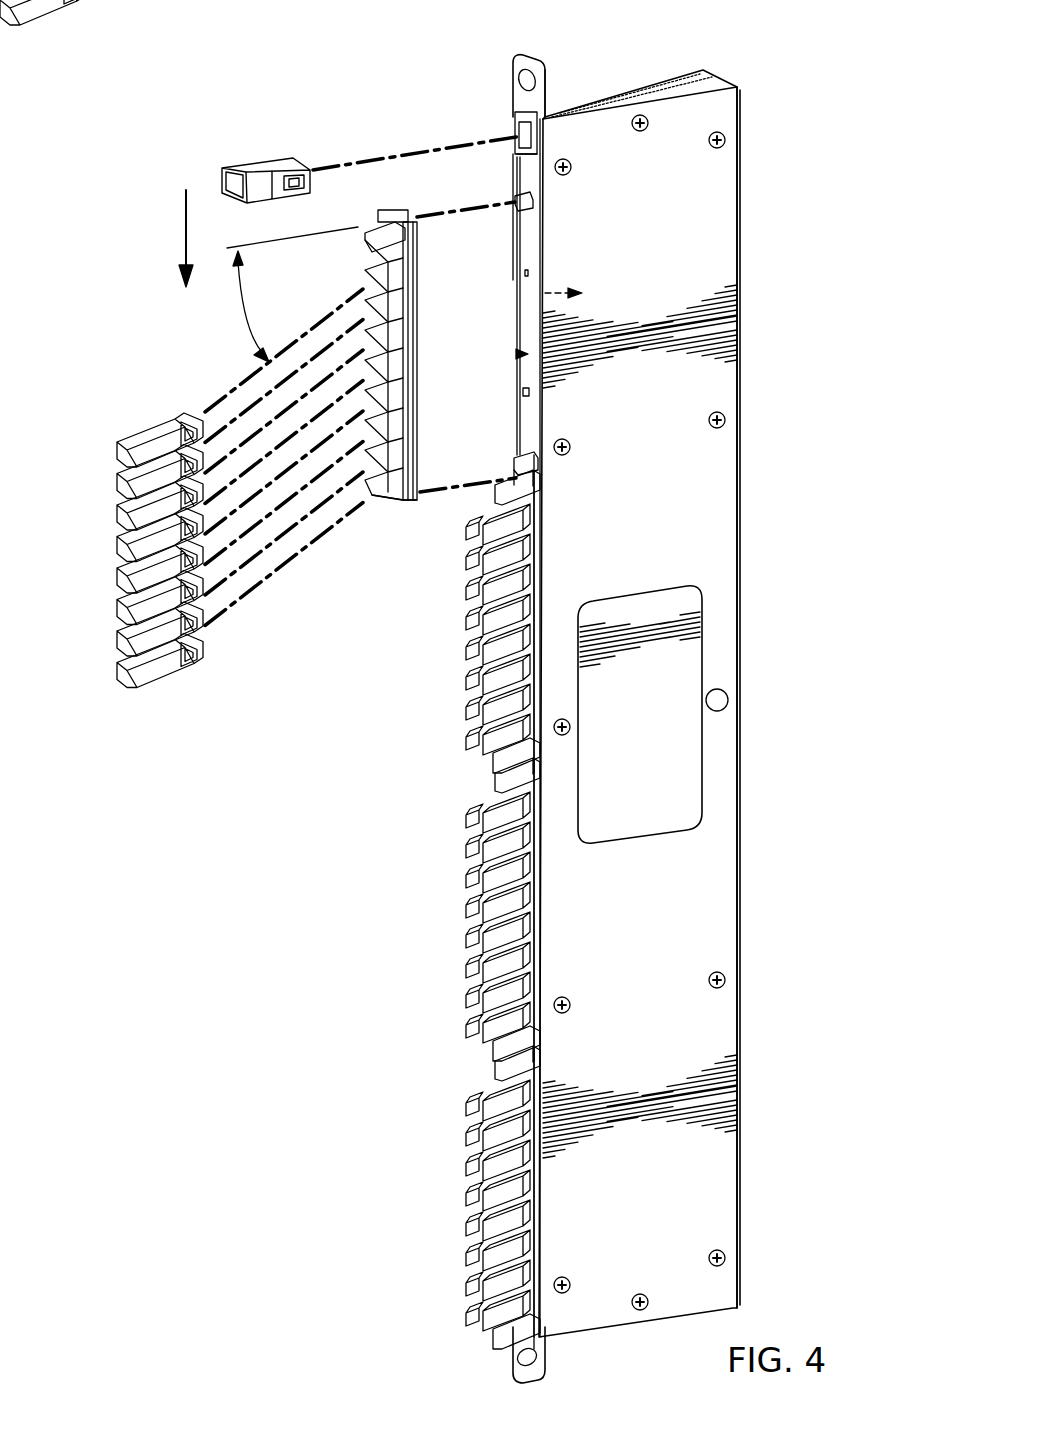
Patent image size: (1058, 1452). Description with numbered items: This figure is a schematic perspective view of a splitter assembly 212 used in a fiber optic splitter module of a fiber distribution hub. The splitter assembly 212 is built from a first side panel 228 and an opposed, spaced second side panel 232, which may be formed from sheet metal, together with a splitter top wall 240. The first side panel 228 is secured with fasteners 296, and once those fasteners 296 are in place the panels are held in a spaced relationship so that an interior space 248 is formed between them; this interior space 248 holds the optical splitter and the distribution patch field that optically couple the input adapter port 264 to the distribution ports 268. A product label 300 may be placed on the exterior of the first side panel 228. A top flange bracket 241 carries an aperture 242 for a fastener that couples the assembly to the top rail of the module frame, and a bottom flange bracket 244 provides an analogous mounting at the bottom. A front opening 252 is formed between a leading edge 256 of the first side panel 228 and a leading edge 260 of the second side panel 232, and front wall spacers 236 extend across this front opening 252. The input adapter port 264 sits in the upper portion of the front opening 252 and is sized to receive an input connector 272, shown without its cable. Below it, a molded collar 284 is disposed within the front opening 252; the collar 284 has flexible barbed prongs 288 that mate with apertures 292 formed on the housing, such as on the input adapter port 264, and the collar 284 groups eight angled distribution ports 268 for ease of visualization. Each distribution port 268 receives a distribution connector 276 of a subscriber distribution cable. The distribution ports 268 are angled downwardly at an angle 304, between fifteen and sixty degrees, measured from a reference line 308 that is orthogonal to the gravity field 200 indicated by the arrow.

The gravity field 200 is at (180, 235).
The splitter assembly 212 is at (728, 1140).
The first side panel 228 is at (727, 193).
The second side panel 232 is at (650, 78).
The front wall spacers 236 is at (536, 452).
The splitter top wall 240 is at (690, 80).
The top flange bracket 241 is at (547, 82).
The aperture 242 is at (513, 80).
The bottom flange bracket 244 is at (513, 1340).
The interior space 248 is at (537, 302).
The front opening 252 is at (518, 354).
The leading edge 256 is at (520, 273).
The leading edge 260 is at (520, 302).
The input adapter port 264 is at (527, 137).
The distribution ports 268 is at (400, 502).
The input connector 272 is at (272, 165).
The distribution connector 276 is at (160, 410).
The collar 284 is at (380, 215).
The flexible barbed prongs 288 is at (420, 428).
The apertures 292 is at (527, 213).
The fasteners 296 is at (726, 982).
The product label 300 is at (690, 792).
The angle 304 is at (240, 313).
The reference line 308 is at (300, 240).